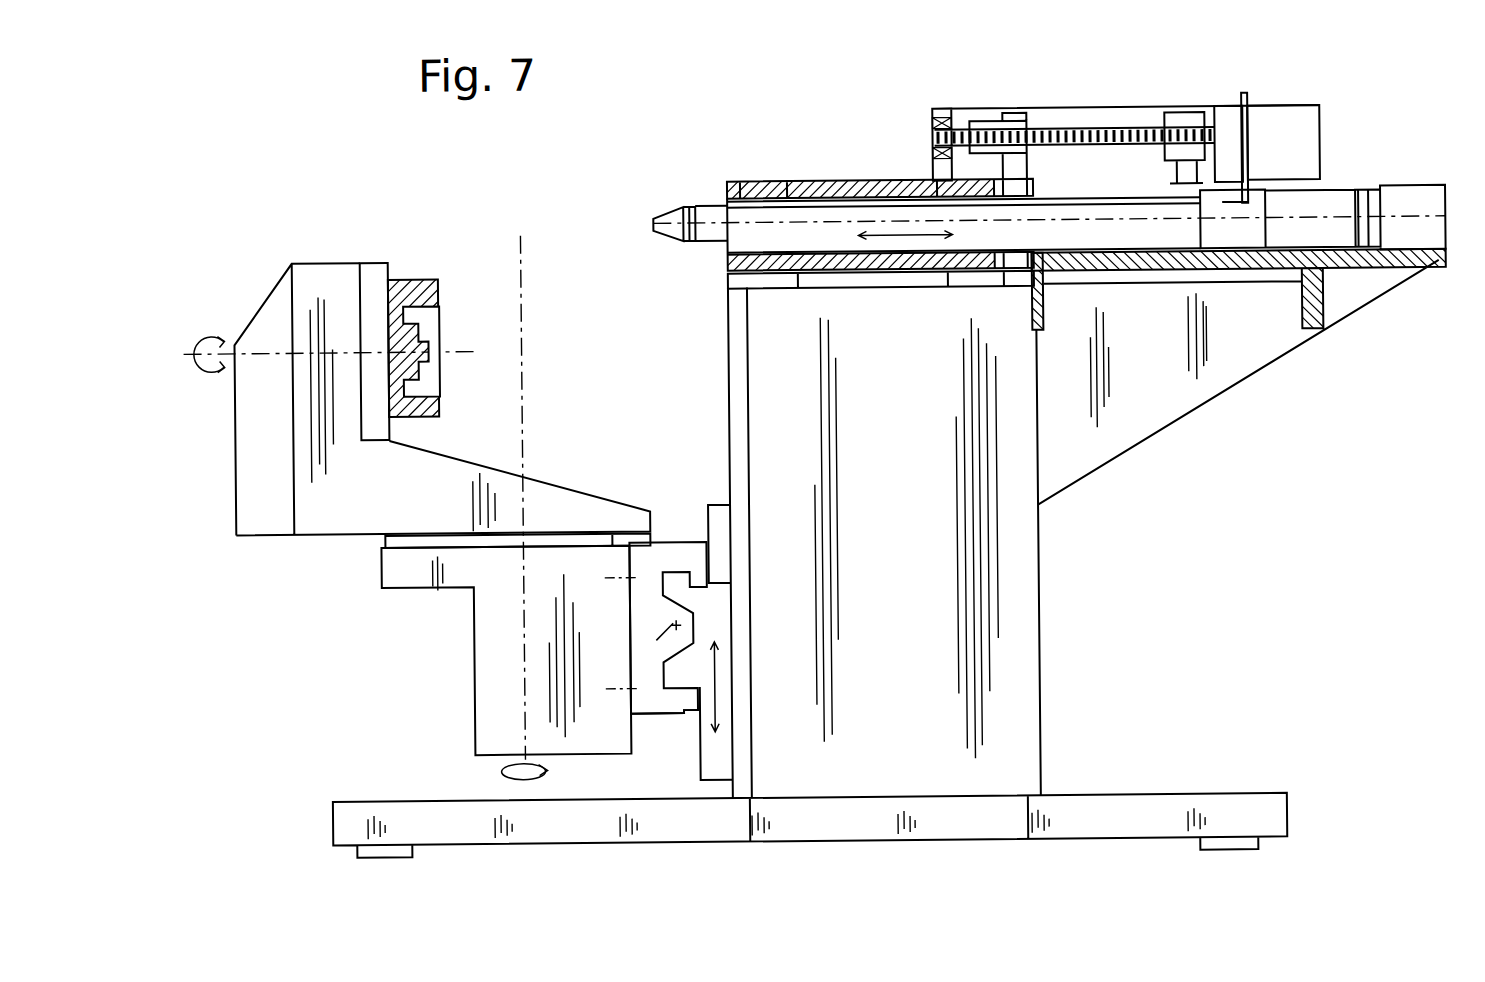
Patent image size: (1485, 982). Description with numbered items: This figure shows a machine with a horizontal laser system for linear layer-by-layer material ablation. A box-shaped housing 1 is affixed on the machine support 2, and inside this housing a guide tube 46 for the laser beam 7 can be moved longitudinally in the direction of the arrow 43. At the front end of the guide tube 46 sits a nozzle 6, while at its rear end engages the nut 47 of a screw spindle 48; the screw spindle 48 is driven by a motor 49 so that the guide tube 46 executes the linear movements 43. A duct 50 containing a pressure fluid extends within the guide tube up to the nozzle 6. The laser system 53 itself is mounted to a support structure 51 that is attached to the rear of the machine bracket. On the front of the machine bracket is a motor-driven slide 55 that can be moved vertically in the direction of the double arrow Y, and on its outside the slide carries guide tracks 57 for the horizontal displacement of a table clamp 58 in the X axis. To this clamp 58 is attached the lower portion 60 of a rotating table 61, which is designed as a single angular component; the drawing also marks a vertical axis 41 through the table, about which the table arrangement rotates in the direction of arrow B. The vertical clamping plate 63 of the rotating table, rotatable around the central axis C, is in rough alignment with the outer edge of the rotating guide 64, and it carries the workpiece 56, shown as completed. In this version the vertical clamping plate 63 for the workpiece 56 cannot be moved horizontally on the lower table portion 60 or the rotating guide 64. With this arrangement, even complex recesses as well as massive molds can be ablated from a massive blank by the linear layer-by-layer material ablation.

The box-shaped housing 1 is at (763, 183).
The machine support 2 is at (890, 741).
The nozzle 6 is at (675, 204).
The laser beam 7 is at (805, 222).
The vertical rotary axis 41 is at (529, 238).
The direction of arrow / linear movements 43 is at (888, 237).
The guide tube 46 is at (758, 200).
The nut 47 is at (1182, 124).
The screw spindle 48 is at (1061, 128).
The motor 49 is at (1276, 132).
The duct 50 is at (1245, 149).
The support structure 51 is at (1225, 261).
The laser system 53 is at (1408, 199).
The motor-driven slide 55 is at (721, 704).
The workpiece 56 is at (415, 286).
The guide tracks 57 is at (678, 677).
The table clamp 58 is at (654, 709).
The lower portion of rotating table 60 is at (488, 709).
The rotating table 61 is at (323, 488).
The vertical clamping plate 63 is at (379, 291).
The rotating guide 64 is at (384, 538).